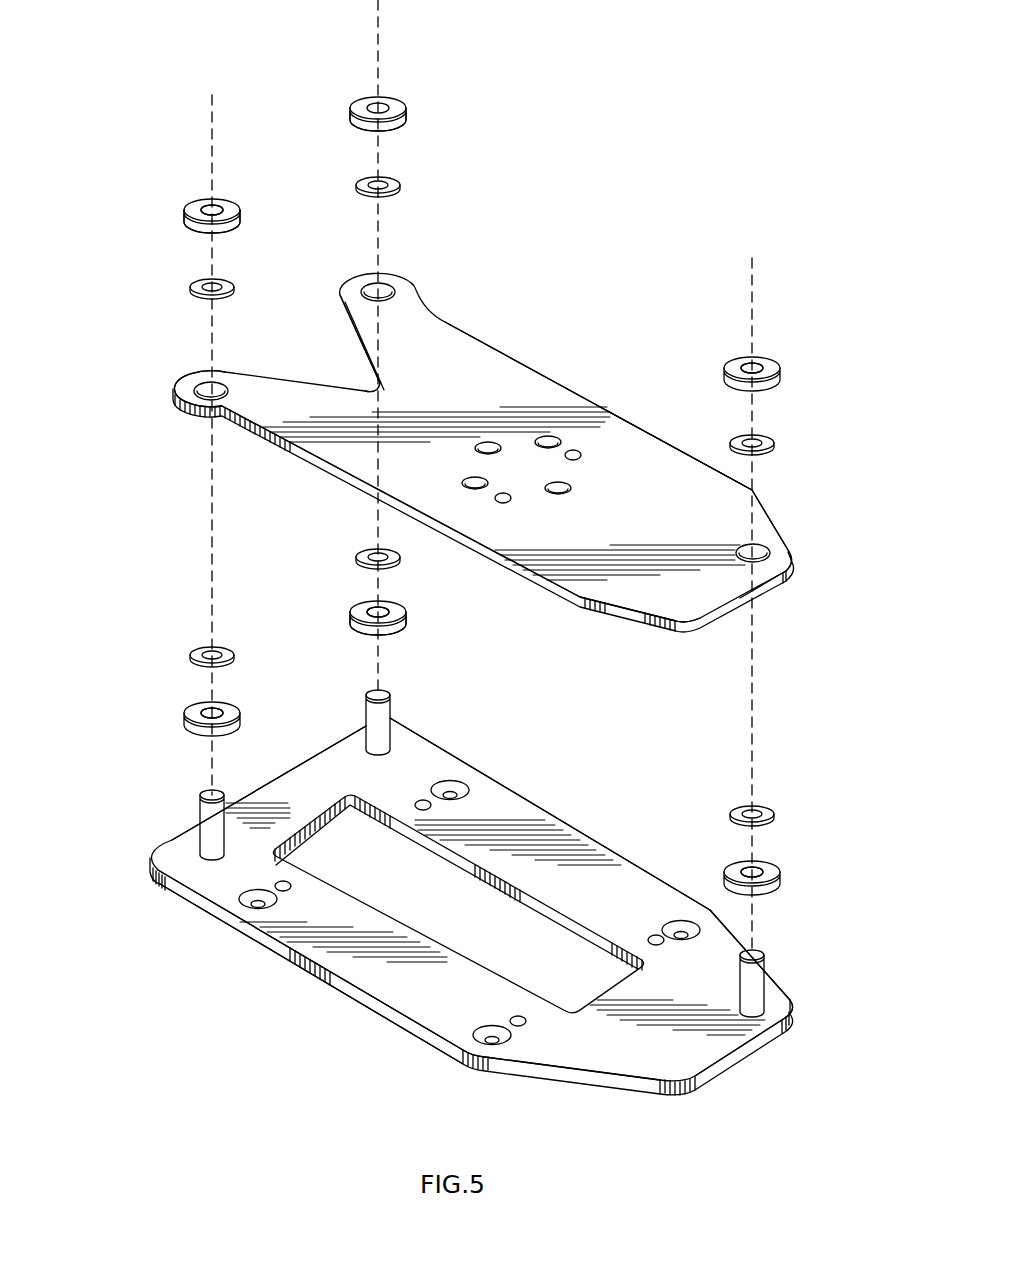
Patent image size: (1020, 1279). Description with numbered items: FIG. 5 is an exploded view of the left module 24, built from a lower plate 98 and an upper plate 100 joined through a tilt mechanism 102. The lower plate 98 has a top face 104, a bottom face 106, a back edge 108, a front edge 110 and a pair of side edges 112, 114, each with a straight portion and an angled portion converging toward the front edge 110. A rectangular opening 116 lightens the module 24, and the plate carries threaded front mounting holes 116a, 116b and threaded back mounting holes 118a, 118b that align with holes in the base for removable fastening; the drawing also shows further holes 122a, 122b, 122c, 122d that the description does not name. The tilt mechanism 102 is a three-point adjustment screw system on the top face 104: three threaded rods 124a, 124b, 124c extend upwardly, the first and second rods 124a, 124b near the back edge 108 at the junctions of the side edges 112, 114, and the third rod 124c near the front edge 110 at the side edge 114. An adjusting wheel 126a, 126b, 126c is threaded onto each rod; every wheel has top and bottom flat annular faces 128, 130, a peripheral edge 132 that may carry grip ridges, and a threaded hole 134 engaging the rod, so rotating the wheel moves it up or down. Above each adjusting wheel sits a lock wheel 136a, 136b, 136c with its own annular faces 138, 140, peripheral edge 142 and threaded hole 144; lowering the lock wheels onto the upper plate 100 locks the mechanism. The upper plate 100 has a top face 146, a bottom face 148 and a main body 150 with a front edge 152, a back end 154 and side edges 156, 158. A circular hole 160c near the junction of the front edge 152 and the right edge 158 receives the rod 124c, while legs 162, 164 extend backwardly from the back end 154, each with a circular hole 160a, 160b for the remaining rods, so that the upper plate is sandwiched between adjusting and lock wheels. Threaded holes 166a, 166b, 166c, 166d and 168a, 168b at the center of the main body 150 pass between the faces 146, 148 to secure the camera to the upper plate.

The left module 24 is at (95, 103).
The lower plate 98 is at (612, 796).
The upper plate 100 is at (673, 347).
The tilt mechanism 102 is at (146, 771).
The top face 104 is at (428, 989).
The bottom face 106 is at (418, 1046).
The back edge 108 is at (294, 768).
The front edge 110 is at (750, 1055).
The side edge 112 is at (316, 978).
The side edge 114 is at (612, 848).
The rectangular opening 116 is at (463, 904).
The front mounting hole 116a is at (525, 1017).
The front mounting hole 116b is at (648, 937).
The back mounting hole 118a is at (288, 882).
The back mounting hole 118b is at (418, 800).
The countersunk hole 122a is at (491, 1029).
The countersunk hole 122b is at (680, 925).
The countersunk hole 122c is at (452, 784).
The countersunk hole 122d is at (252, 895).
The threaded rod 124a is at (198, 821).
The threaded rod 124b is at (399, 720).
The threaded rod 124c is at (771, 969).
The adjusting wheel 126a is at (174, 705).
The adjusting wheel 126b is at (343, 599).
The adjusting wheel 126c is at (786, 877).
The top annular face 128 is at (392, 606).
The bottom annular face 130 is at (393, 633).
The peripheral edge 132 is at (244, 708).
The threaded hole 134 is at (762, 868).
The lock wheel 136a is at (173, 207).
The lock wheel 136b is at (349, 99).
The lock wheel 136c is at (795, 377).
The top annular face 138 is at (222, 200).
The bottom annular face 140 is at (231, 235).
The peripheral edge 142 is at (406, 112).
The threaded hole 144 is at (759, 368).
The top face 146 is at (463, 374).
The bottom face 148 is at (343, 486).
The main body 150 is at (534, 388).
The front edge 152 is at (770, 590).
The back end 154 is at (366, 398).
The side edge 156 is at (524, 578).
The right edge 158 is at (684, 441).
The circular hole 160a is at (218, 388).
The circular hole 160b is at (384, 290).
The circular hole 160c is at (764, 548).
The leg 162 is at (162, 392).
The leg 164 is at (615, 413).
The threaded hole 166a is at (486, 442).
The threaded hole 166b is at (466, 479).
The threaded hole 166c is at (556, 437).
The threaded hole 166d is at (567, 491).
The threaded hole 168a is at (505, 504).
The threaded hole 168b is at (582, 458).